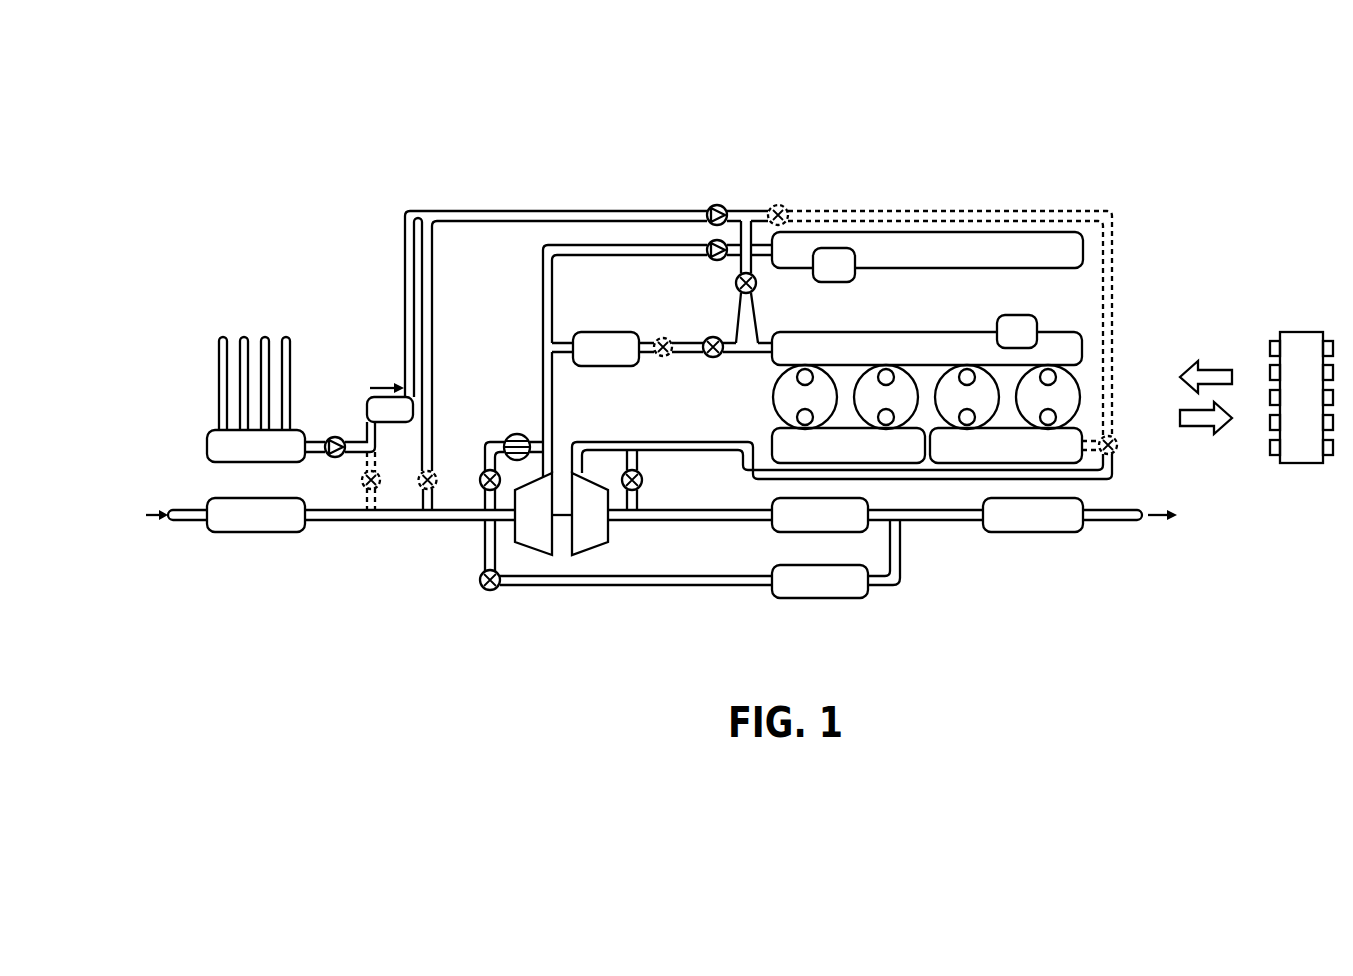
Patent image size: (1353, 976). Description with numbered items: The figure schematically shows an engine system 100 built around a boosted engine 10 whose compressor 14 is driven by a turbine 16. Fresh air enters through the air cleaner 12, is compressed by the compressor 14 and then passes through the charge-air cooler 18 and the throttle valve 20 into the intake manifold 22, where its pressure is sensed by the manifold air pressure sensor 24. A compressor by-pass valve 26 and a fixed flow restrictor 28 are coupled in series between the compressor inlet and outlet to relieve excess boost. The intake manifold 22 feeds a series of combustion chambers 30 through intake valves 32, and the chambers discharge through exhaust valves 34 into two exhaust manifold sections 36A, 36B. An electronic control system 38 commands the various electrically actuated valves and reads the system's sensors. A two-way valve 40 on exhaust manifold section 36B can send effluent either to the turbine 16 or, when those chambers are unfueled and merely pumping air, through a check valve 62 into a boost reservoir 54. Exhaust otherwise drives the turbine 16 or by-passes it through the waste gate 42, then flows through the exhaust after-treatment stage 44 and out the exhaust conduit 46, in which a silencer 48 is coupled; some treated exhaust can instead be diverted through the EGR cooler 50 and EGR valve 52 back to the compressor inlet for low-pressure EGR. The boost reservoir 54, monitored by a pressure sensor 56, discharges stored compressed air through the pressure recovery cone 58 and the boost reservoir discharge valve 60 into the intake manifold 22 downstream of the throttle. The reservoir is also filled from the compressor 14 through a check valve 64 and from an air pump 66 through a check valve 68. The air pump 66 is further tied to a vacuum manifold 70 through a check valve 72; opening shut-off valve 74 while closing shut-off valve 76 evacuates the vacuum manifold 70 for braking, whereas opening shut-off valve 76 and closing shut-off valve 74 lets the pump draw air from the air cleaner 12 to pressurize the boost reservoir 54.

The engine system 100 is at (692, 331).
The engine 10 is at (939, 376).
The air cleaner 12 is at (245, 525).
The compressor 14 is at (527, 513).
The turbine 16 is at (584, 513).
The charge-air cooler 18 is at (595, 359).
The throttle valve 20 is at (715, 357).
The intake manifold 22 is at (915, 359).
The manifold air pressure (MAP) sensor 24 is at (1006, 342).
The compressor by-pass valve 26 is at (480, 487).
The fixed flow restrictor 28 is at (511, 435).
The combustion chambers 30 is at (1092, 396).
The intake valves 32 is at (804, 369).
The exhaust valves 34 is at (800, 412).
The exhaust manifold section 36A is at (831, 456).
The exhaust manifold section 36B is at (989, 456).
The electronic control system 38 is at (1290, 408).
The two-way valve 40 is at (1116, 437).
The waste gate 42 is at (668, 478).
The exhaust after-treatment stage 44 is at (809, 525).
The exhaust conduit 46 is at (1105, 523).
The silencer 48 is at (1022, 525).
The EGR cooler 50 is at (809, 592).
The EGR valve 52 is at (480, 587).
The boost reservoir 54 is at (917, 261).
The pressure sensor 56 is at (823, 275).
The pressure recovery cone 58 is at (738, 312).
The boost reservoir discharge valve / check valve 60 is at (737, 287).
The check valve 62 is at (783, 205).
The check valve 64 is at (708, 245).
The air pump 66 is at (379, 420).
The check valve 68 is at (722, 206).
The vacuum manifold 70 is at (245, 456).
The check valve 72 is at (338, 437).
The shut-off valve 74 is at (418, 486).
The shut-off valve 76 is at (362, 485).